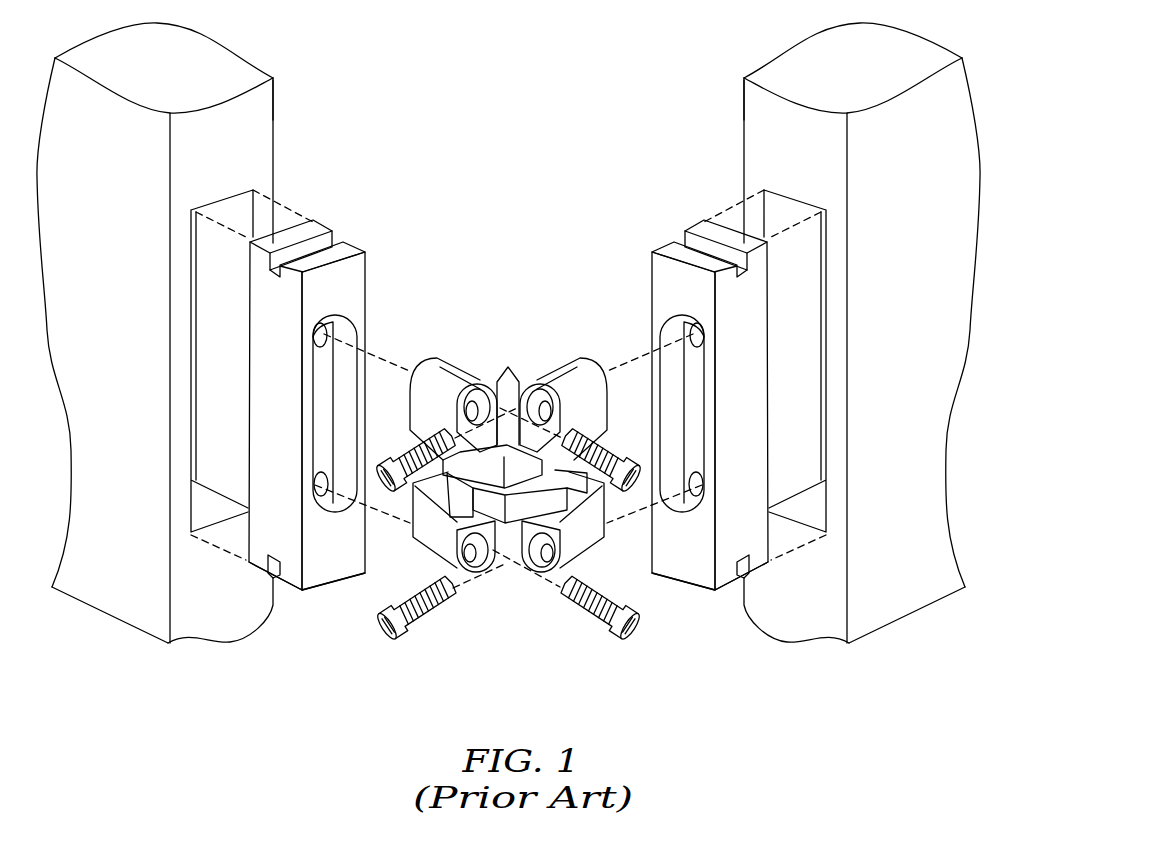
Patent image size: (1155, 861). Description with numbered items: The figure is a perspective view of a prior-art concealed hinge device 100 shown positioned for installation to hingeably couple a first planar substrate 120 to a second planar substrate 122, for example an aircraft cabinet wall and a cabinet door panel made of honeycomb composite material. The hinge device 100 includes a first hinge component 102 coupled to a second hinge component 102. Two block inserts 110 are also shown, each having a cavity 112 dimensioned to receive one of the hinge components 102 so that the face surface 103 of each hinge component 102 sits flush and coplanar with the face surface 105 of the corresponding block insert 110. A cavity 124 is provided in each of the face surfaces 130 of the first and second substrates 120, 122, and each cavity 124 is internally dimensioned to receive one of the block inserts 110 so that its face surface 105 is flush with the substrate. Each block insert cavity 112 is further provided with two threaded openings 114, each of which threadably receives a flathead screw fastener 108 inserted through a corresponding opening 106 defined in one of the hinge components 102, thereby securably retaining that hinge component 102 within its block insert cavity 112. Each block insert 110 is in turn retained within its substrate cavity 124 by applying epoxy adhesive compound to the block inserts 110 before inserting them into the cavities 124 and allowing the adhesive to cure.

The concealed hinge device 100 is at (1068, 118).
The hinge component 102 is at (507, 459).
The face surface 103 is at (458, 425).
The face surface 105 is at (340, 565).
The opening 106 is at (540, 384).
The flathead screw fastener 108 is at (405, 460).
The block insert 110 is at (508, 438).
The cavity 112 is at (350, 360).
The threaded opening 114 is at (337, 326).
The first planar substrate 120 is at (212, 65).
The second planar substrate 122 is at (805, 65).
The cavity 124 is at (237, 213).
The face surface 130 is at (263, 120).